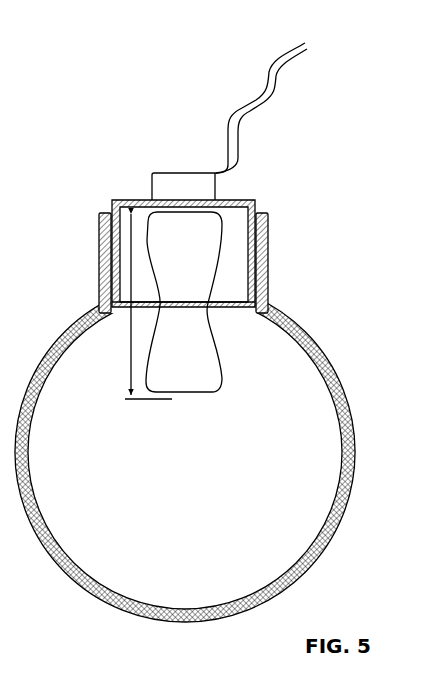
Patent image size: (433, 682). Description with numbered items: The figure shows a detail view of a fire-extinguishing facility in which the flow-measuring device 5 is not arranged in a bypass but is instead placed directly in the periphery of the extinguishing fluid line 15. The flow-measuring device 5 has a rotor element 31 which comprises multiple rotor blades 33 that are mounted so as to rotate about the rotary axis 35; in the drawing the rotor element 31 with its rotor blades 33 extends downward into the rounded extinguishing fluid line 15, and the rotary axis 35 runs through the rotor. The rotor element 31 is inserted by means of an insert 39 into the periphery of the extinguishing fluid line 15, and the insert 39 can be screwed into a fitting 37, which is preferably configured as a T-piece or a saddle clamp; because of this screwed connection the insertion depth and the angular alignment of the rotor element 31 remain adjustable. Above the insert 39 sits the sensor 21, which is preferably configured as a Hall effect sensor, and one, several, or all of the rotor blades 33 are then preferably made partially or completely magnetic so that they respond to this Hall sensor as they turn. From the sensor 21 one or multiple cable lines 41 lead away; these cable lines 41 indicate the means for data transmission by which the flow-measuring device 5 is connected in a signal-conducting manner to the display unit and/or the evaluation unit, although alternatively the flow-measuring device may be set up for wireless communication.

The flow-measuring device 5 is at (208, 231).
The extinguishing fluid line 15 is at (329, 348).
The sensor 21 is at (157, 169).
The rotor element 31 is at (226, 316).
The rotor blades 33 is at (200, 265).
The rotary axis 35 is at (233, 312).
The fitting 37 is at (270, 250).
The insert 39 is at (261, 203).
The cable lines 41 is at (281, 90).